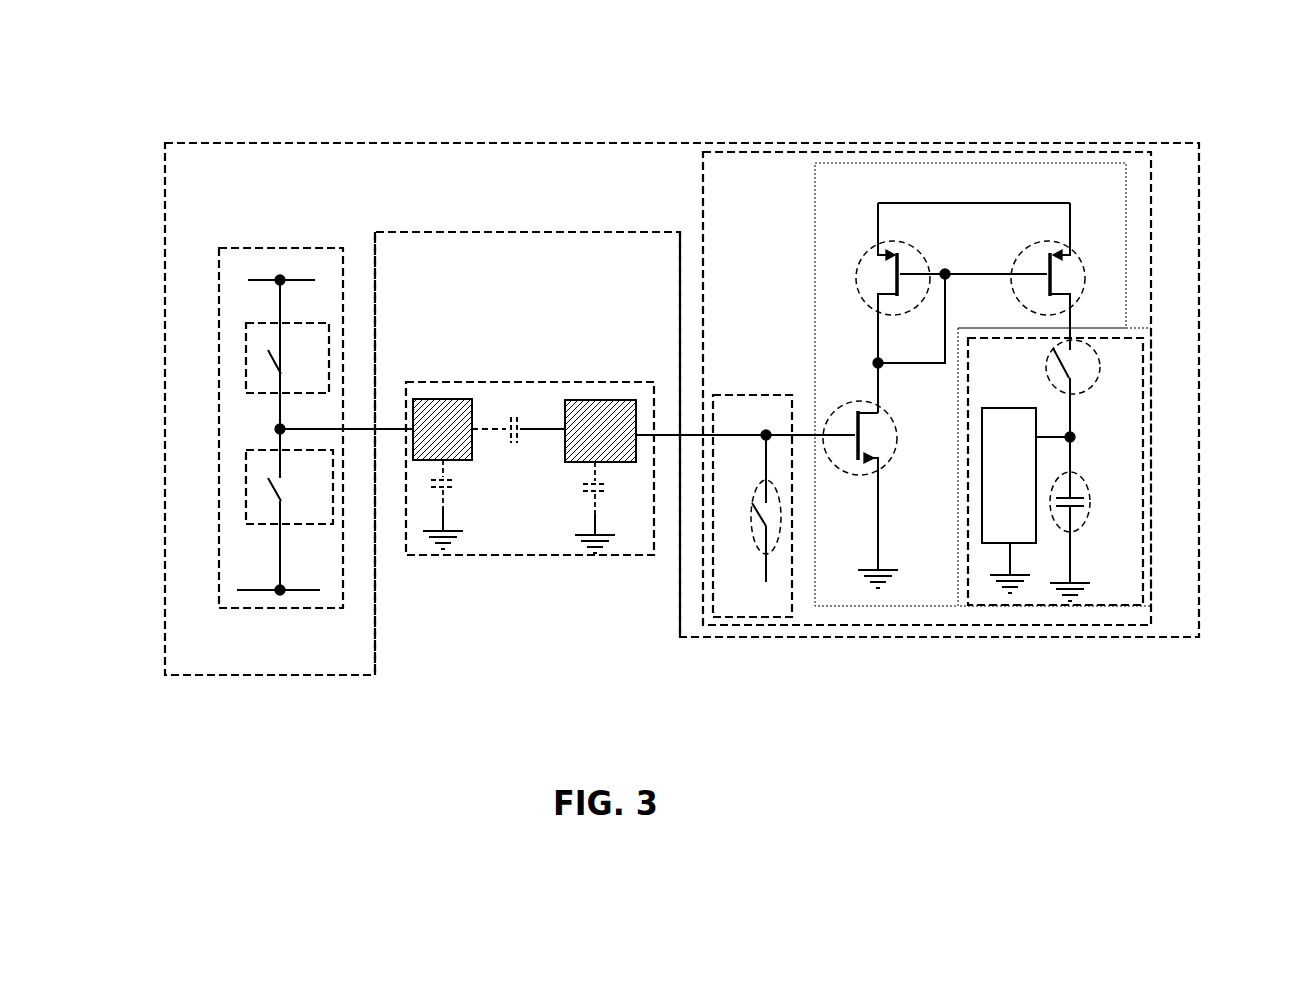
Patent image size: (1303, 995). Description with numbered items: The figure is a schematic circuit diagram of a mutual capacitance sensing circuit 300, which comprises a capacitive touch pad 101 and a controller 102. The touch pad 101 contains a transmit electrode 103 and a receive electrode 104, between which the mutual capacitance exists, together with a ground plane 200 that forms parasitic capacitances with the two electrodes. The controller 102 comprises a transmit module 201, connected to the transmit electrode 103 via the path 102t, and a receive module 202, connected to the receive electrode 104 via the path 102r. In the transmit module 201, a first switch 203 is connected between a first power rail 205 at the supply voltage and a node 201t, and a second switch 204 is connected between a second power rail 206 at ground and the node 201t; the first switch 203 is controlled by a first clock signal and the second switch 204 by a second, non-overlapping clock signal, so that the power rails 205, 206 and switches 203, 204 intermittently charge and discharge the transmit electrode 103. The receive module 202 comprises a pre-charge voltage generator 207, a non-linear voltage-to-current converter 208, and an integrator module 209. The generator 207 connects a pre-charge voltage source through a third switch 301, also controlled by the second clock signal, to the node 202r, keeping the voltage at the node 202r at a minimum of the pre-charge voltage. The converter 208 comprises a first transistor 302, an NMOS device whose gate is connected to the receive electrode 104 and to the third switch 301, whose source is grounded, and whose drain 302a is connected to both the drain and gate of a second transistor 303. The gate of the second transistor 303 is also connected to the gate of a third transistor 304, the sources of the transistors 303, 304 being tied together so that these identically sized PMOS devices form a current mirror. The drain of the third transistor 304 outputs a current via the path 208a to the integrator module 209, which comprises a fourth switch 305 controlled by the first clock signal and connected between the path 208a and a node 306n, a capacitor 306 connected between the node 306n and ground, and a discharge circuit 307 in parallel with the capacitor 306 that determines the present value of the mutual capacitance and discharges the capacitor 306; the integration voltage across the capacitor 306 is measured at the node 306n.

The mutual capacitance sensing circuit 300 is at (537, 67).
The controller 102 is at (388, 136).
The conductive path 102t is at (396, 433).
The conductive path 102r is at (663, 433).
The transmit module 201 is at (266, 248).
The node 201t is at (276, 428).
The first switch 203 is at (246, 360).
The second switch 204 is at (247, 462).
The first power rail 205 is at (265, 281).
The second power rail 206 is at (262, 585).
The capacitive touch pad 101 is at (502, 555).
The transmit electrode 103 is at (443, 399).
The receive electrode 104 is at (609, 400).
The ground plane 200 is at (582, 543).
The receive module 202 is at (755, 150).
The node 202r is at (775, 442).
The pre-charge voltage generator 207 is at (732, 617).
The third switch 301 is at (752, 490).
The non-linear voltage-to-current converter 208 is at (1130, 210).
The path 208a is at (1153, 329).
The first transistor 302 is at (852, 402).
The drain 302a is at (875, 378).
The second transistor 303 is at (857, 283).
The third transistor 304 is at (1060, 238).
The integrator module 209 is at (1047, 605).
The fourth switch 305 is at (1098, 375).
The capacitor 306 is at (1090, 518).
The node 306n is at (1078, 440).
The discharge circuit 307 is at (1026, 492).